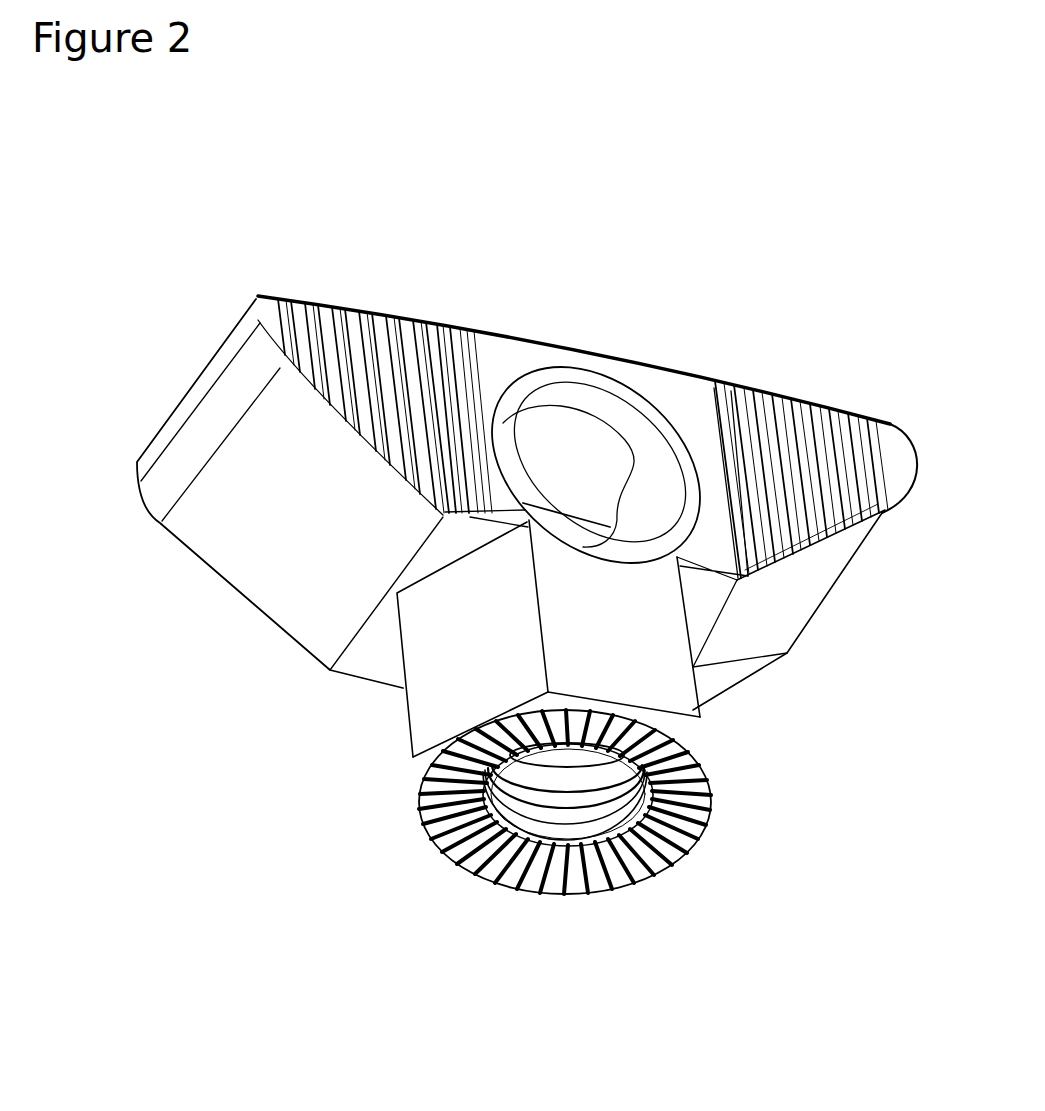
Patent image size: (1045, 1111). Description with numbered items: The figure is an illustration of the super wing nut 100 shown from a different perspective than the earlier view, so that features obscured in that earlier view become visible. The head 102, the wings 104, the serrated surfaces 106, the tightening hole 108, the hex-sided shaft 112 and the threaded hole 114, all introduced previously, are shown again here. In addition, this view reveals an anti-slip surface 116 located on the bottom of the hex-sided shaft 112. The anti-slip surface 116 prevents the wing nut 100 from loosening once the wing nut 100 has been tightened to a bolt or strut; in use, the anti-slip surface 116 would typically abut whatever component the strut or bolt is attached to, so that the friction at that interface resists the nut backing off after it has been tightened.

The super wing nut 100 is at (448, 128).
The head 102 is at (560, 343).
The wings 104 is at (878, 617).
The serrated surfaces 106 is at (800, 293).
The tightening hole 108 is at (560, 470).
The hex-sided shaft 112 is at (405, 720).
The threaded hole 114 is at (537, 817).
The anti-slip surface 116 is at (667, 840).